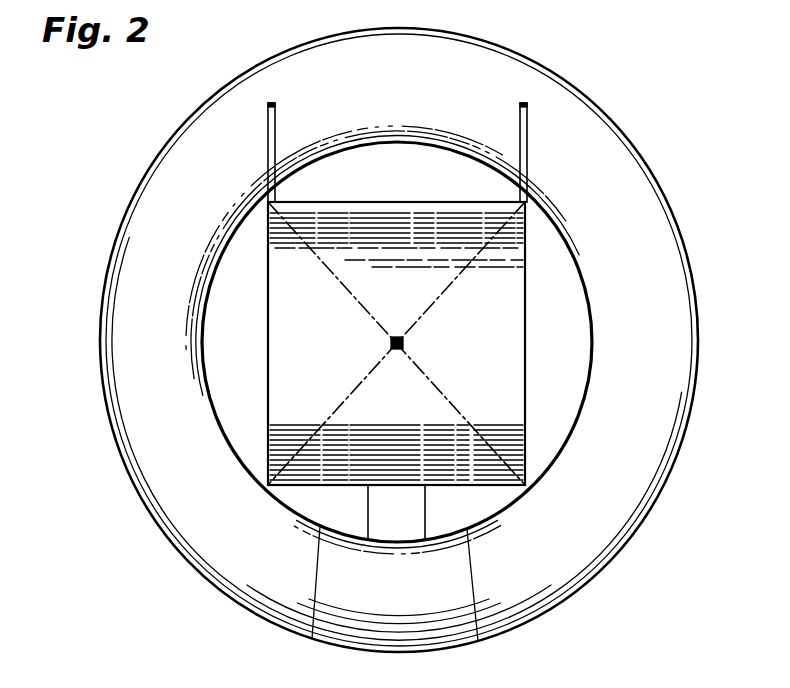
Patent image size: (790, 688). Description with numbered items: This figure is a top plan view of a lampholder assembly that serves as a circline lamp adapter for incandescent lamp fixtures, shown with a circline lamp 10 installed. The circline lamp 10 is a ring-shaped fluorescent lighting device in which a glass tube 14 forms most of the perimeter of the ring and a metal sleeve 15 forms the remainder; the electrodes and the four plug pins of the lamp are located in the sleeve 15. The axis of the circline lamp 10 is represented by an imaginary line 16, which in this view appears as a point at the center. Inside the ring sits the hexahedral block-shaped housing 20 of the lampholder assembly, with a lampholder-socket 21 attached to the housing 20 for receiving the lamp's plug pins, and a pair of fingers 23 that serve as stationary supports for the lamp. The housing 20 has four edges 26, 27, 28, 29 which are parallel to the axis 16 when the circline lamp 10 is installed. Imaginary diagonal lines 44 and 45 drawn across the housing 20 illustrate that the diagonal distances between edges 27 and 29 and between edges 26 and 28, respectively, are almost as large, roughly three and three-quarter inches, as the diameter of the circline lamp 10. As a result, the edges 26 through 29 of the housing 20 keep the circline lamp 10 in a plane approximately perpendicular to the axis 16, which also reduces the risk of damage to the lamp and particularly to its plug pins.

The circline lamp 10 is at (705, 365).
The glass tube 14 is at (672, 200).
The metal sleeve 15 is at (462, 648).
The imaginary line 16 is at (404, 343).
The hexahedral block-shaped housing 20 is at (526, 316).
The lampholder-socket 21 is at (425, 522).
The pair of fingers 23 is at (277, 108).
The edge 26 is at (265, 480).
The edge 27 is at (530, 482).
The edge 28 is at (530, 212).
The edge 29 is at (262, 208).
The imaginary diagonal line 44 is at (346, 292).
The imaginary diagonal line 45 is at (355, 392).